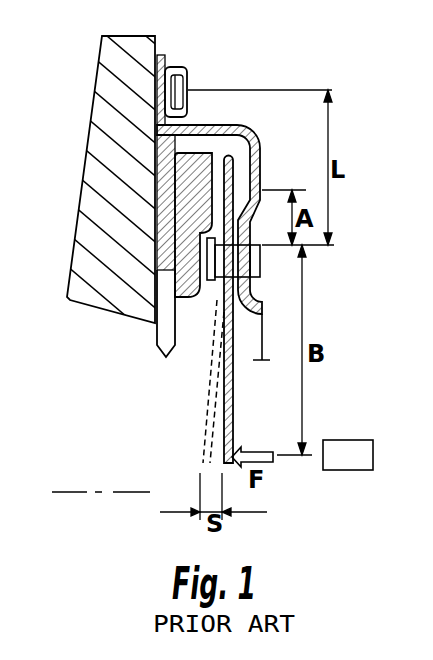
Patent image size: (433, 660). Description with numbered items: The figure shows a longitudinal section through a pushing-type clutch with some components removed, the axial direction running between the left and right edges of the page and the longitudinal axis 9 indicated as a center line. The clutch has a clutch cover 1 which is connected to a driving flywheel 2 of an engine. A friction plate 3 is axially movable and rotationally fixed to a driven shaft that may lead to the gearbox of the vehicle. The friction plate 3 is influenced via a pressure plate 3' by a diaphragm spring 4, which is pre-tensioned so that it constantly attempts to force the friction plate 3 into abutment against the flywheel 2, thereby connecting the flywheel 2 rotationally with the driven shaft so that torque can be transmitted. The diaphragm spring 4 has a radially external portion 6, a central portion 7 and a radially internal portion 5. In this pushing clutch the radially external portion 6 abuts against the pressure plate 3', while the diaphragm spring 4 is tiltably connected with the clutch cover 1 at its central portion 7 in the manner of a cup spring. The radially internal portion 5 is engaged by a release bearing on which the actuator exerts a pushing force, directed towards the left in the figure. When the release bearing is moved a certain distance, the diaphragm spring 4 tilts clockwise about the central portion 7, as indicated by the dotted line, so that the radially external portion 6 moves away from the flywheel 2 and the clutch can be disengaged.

The clutch cover 1 is at (228, 138).
The driving flywheel 2 is at (90, 182).
The friction plate 3 is at (154, 253).
The pressure plate 3' is at (193, 106).
The diaphragm spring 4 is at (218, 390).
The radially internal portion 5 is at (227, 445).
The radially external portion 6 is at (263, 156).
The central portion 7 is at (255, 291).
The longitudinal axis 9 is at (73, 492).